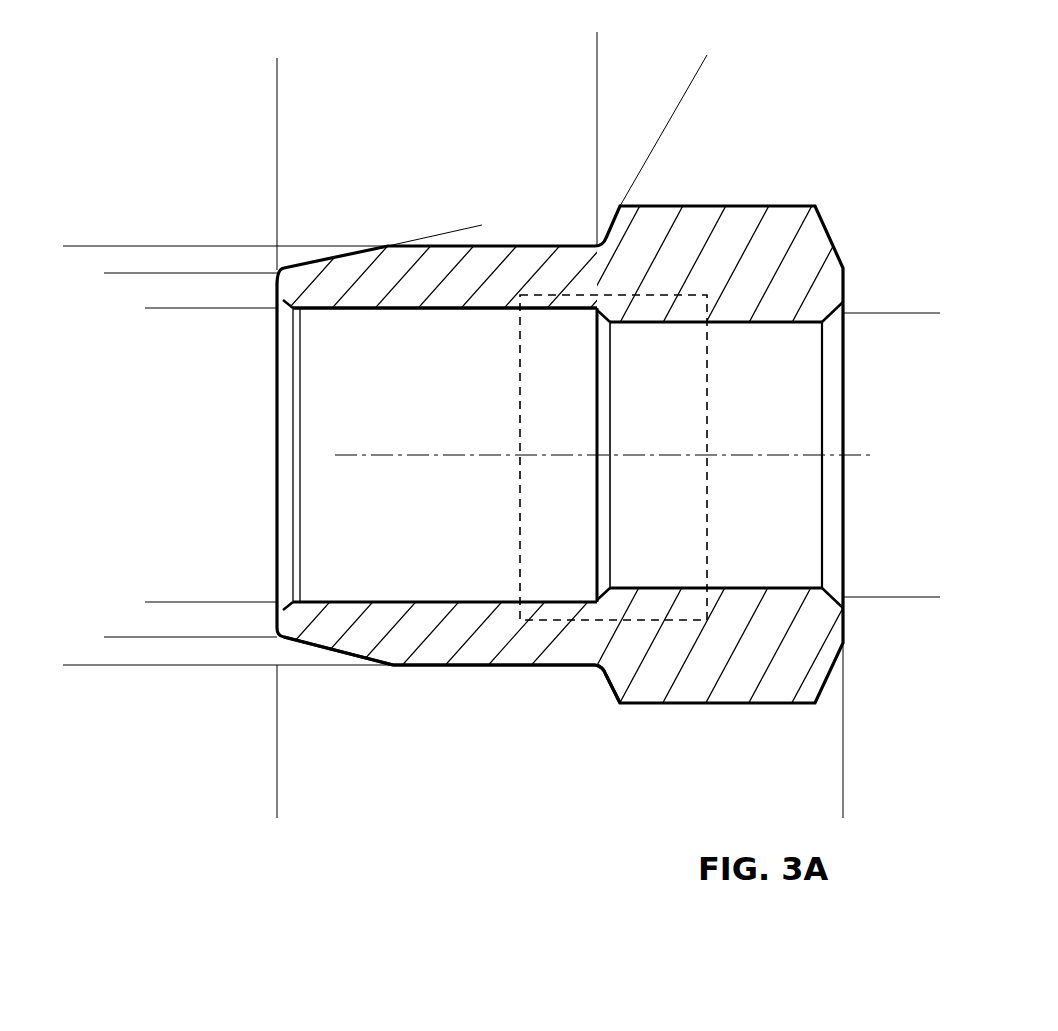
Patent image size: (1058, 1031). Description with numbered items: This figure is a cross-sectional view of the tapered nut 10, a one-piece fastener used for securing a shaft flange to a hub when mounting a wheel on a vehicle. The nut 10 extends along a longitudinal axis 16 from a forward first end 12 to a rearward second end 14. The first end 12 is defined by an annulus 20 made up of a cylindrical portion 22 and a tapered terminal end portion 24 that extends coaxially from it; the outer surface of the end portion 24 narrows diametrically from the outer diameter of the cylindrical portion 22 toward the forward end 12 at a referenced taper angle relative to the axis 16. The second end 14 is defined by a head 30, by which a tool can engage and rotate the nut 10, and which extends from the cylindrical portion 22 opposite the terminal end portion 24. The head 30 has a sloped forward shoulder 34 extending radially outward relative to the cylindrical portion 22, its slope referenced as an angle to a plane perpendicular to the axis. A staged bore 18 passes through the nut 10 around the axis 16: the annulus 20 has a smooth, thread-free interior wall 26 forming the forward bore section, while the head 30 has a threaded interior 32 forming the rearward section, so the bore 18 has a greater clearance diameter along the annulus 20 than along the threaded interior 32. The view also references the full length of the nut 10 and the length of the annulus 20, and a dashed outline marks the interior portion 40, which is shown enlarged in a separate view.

The nut 10 is at (235, 188).
The first end 12 is at (232, 693).
The second end 14 is at (885, 630).
The longitudinal axis 16 is at (465, 456).
The staged bore 18 is at (330, 383).
The annulus 20 is at (422, 700).
The cylindrical portion 22 is at (507, 666).
The tapered terminal end portion 24 is at (328, 650).
The interior wall 26 is at (488, 309).
The head 30 is at (682, 712).
The threaded interior 32 is at (668, 323).
The forward shoulder 34 is at (605, 686).
The interior portion 40 is at (520, 542).